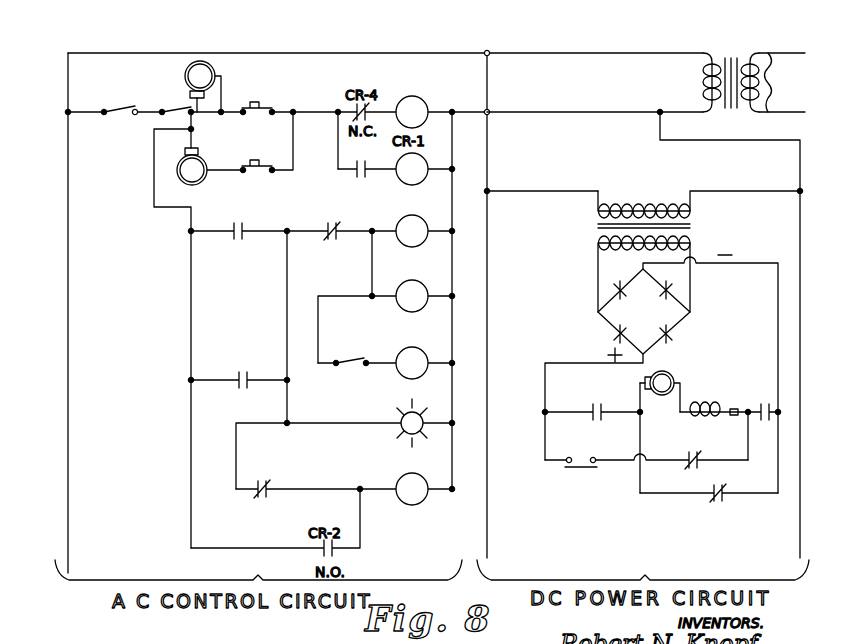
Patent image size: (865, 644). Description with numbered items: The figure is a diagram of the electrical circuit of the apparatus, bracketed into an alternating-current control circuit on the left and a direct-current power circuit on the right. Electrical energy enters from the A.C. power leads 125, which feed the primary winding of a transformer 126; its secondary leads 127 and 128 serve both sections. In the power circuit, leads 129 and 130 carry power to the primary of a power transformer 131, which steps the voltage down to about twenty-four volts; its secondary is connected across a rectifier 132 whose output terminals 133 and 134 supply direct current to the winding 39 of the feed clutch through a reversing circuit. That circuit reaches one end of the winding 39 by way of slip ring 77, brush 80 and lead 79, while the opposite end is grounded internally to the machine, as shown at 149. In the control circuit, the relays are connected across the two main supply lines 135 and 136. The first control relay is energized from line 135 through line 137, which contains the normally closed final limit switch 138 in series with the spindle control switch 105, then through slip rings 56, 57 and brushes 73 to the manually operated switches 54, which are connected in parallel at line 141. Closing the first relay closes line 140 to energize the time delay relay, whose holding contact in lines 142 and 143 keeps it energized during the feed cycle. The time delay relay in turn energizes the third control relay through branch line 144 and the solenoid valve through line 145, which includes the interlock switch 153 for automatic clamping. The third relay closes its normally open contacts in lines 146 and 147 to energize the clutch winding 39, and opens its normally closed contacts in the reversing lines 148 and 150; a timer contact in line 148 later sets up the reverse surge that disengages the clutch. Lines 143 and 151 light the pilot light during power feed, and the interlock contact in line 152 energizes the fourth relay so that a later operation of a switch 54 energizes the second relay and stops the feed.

The clutch winding 39 is at (735, 409).
The manually operated switch 54 is at (262, 103).
The slip ring 56 is at (214, 68).
The slip ring 57 is at (205, 181).
The brush 73 is at (200, 100).
The slip ring 77 is at (683, 370).
The lead 79 is at (700, 403).
The brush 80 is at (658, 371).
The spindle control switch 105 is at (112, 110).
The A.C. power leads 125 is at (766, 53).
The transformer 126 is at (740, 58).
The secondary lead 127 is at (658, 58).
The secondary lead 128 is at (624, 112).
The lead 129 is at (487, 165).
The lead 130 is at (772, 140).
The power transformer 131 is at (598, 228).
The rectifier 132 is at (684, 297).
The rectifier output terminal 133 is at (570, 363).
The rectifier output terminal 134 is at (775, 263).
The main supply line 135 is at (68, 317).
The main supply line 136 is at (452, 347).
The line 137 is at (325, 112).
The final limit switch 138 is at (170, 107).
The line 140 is at (300, 228).
The line 141 is at (383, 172).
The line 142 is at (208, 378).
The line 143 is at (287, 308).
The branch line 144 is at (372, 272).
The line 145 is at (318, 330).
The line 146 is at (563, 412).
The line 147 is at (778, 412).
The reversing line 148 is at (655, 460).
The ground connection 149 is at (734, 436).
The reversing line 150 is at (770, 493).
The line 151 is at (358, 401).
The line 152 is at (300, 488).
The interlock switch 153 is at (352, 361).